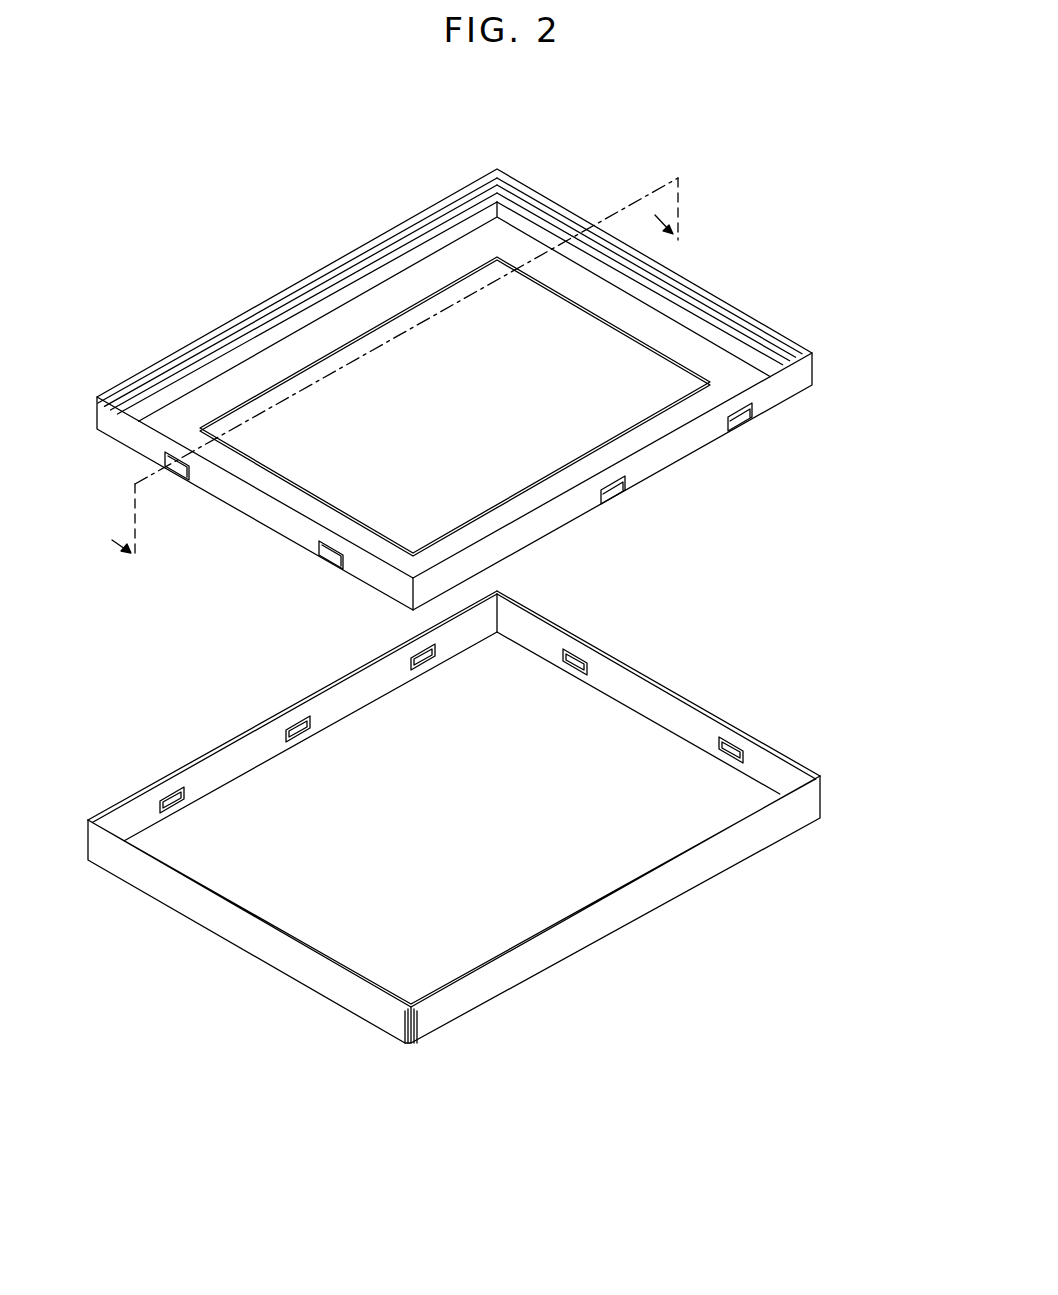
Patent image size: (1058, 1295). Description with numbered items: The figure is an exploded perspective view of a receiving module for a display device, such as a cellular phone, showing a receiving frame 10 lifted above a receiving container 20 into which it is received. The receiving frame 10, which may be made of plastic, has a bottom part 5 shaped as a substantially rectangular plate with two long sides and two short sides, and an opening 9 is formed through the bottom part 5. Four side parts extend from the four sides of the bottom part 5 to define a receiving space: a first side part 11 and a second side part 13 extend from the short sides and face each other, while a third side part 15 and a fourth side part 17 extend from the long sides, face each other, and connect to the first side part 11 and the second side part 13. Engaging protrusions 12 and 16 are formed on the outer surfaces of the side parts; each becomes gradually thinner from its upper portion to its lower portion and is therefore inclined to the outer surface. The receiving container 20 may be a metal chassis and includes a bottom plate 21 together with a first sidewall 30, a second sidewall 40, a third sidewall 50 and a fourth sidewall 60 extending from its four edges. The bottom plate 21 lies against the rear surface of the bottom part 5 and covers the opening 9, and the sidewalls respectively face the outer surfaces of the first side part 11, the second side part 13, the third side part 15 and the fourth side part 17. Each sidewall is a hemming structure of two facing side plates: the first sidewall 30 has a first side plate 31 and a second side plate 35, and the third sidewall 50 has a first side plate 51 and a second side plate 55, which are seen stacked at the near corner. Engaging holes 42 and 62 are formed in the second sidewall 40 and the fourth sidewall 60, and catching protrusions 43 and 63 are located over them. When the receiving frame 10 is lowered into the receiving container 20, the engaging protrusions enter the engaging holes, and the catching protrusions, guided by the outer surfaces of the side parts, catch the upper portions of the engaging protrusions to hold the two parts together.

The bottom part 5 is at (553, 483).
The opening 9 is at (560, 403).
The receiving frame 10 is at (498, 389).
The first side part 11 is at (294, 531).
The engaging protrusion 12 is at (327, 557).
The second side part 13 is at (730, 305).
The third side part 15 is at (698, 438).
The engaging protrusion 16 is at (745, 418).
The fourth side part 17 is at (257, 304).
The receiving container 20 is at (493, 864).
The bottom plate 21 is at (583, 873).
The first sidewall 30 is at (373, 1073).
The first side plate 31 is at (395, 1054).
The second side plate 35 is at (405, 1043).
The second sidewall 40 is at (790, 752).
The engaging hole 42 is at (722, 748).
The catching protrusion 43 is at (728, 747).
The third sidewall 50 is at (449, 1073).
The first side plate 51 is at (414, 1043).
The second side plate 55 is at (417, 1043).
The fourth sidewall 60 is at (290, 698).
The engaging hole 62 is at (178, 798).
The catching protrusion 63 is at (175, 796).